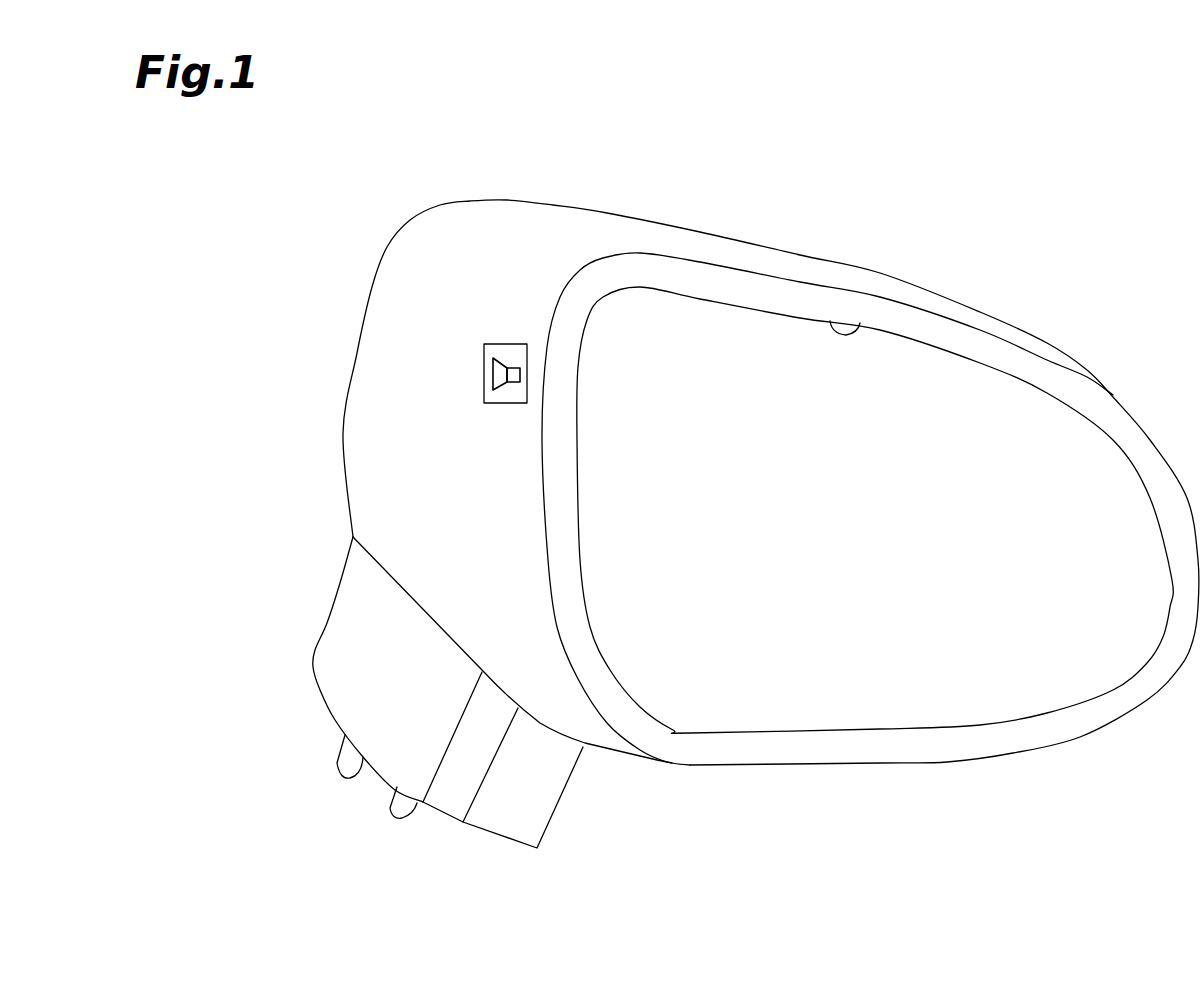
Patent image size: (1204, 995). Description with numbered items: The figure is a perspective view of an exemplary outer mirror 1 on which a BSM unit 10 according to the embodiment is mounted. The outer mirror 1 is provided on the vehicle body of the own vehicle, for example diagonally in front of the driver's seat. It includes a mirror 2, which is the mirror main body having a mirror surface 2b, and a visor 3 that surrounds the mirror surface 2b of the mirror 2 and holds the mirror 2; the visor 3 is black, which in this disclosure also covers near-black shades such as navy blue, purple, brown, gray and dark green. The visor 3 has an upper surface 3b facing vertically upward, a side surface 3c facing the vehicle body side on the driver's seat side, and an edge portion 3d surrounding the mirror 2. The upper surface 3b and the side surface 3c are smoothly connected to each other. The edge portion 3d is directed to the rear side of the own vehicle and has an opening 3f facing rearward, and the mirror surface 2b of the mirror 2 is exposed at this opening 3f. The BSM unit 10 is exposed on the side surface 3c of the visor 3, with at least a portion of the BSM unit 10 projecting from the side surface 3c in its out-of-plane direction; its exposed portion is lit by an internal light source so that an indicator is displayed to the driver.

The outer mirror 1 is at (840, 224).
The mirror 2 is at (1040, 434).
The mirror surface 2b is at (957, 395).
The visor 3 is at (692, 222).
The upper surface 3b is at (606, 230).
The side surface 3c is at (437, 455).
The edge portion 3d is at (793, 283).
The opening 3f is at (860, 323).
The BSM unit 10 is at (507, 338).